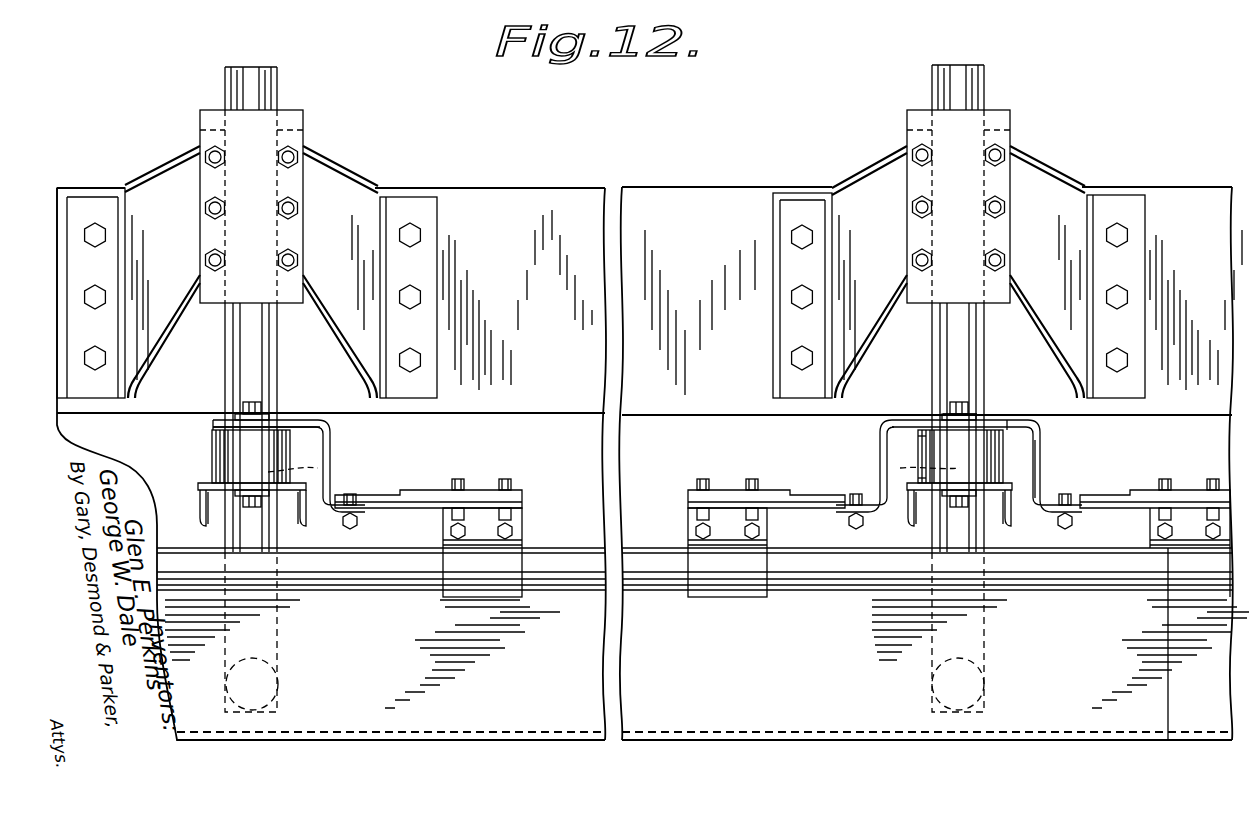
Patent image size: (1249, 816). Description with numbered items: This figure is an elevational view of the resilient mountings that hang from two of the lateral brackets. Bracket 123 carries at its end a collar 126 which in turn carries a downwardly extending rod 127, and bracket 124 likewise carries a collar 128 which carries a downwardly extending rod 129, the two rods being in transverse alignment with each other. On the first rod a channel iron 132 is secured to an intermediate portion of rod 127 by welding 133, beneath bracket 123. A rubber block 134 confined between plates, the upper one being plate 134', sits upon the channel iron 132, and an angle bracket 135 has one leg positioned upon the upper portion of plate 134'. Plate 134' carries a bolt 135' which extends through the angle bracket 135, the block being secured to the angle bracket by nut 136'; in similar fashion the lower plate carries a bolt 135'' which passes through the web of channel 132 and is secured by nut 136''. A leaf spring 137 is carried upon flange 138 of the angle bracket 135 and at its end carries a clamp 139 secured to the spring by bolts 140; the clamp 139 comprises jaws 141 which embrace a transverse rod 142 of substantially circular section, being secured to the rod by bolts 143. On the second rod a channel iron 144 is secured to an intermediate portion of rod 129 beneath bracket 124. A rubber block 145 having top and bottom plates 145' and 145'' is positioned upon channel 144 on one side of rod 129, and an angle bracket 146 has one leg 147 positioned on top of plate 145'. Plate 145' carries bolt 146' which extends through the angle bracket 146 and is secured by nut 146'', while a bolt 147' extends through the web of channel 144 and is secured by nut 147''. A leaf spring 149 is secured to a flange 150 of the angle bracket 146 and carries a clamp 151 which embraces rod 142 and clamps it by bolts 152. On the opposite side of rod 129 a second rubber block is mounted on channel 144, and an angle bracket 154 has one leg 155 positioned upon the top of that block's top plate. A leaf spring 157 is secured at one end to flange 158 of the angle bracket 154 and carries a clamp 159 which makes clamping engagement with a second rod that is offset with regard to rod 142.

The bracket 123 is at (348, 176).
The bracket 124 is at (1060, 172).
The collar 126 is at (305, 140).
The rod 127 is at (272, 92).
The collar 128 is at (1012, 140).
The rod 129 is at (979, 92).
The channel iron 132 is at (307, 518).
The welding 133 is at (212, 497).
The rubber block 134 is at (215, 456).
The plate 134' is at (228, 432).
The angle bracket 135 is at (330, 466).
The bolt 135' is at (276, 405).
The bolt 135'' is at (325, 464).
The nut 136' is at (284, 381).
The nut 136'' is at (218, 520).
The leaf spring 137 is at (405, 495).
The flange 138 is at (345, 520).
The clamp 139 is at (518, 512).
The bolts 140 is at (507, 485).
The jaws 141 is at (522, 568).
The transverse rod 142 is at (396, 562).
The bolts 143 is at (512, 531).
The channel iron 144 is at (1014, 520).
The rubber block 145 is at (1002, 451).
The top plate 145' is at (876, 448).
The bottom plate 145'' is at (876, 483).
The angle bracket 146 is at (859, 463).
The bolt 146' is at (998, 392).
The nut 146'' is at (924, 391).
The leg 147 is at (936, 408).
The bolt 147' is at (893, 464).
The nut 147'' is at (927, 520).
The leaf spring 149 is at (782, 495).
The flange 150 is at (850, 518).
The clamp 151 is at (770, 528).
The bolts 152 is at (697, 531).
The angle bracket 154 is at (1042, 464).
The leg 155 is at (1010, 424).
The leaf spring 157 is at (1162, 494).
The flange 158 is at (1067, 520).
The clamp 159 is at (1158, 531).